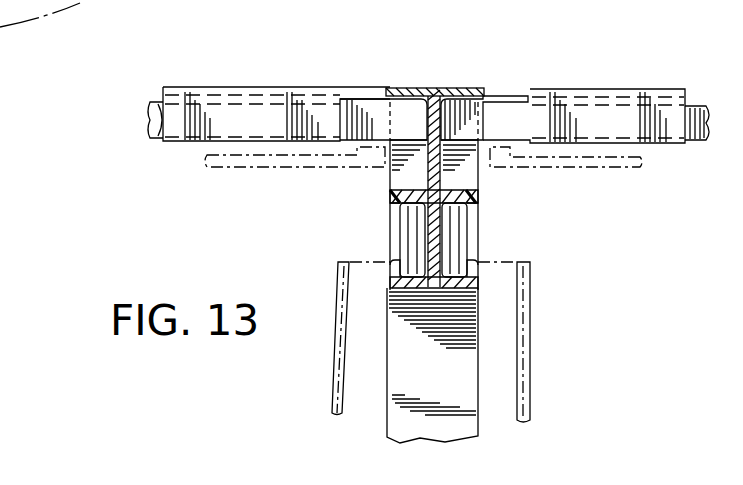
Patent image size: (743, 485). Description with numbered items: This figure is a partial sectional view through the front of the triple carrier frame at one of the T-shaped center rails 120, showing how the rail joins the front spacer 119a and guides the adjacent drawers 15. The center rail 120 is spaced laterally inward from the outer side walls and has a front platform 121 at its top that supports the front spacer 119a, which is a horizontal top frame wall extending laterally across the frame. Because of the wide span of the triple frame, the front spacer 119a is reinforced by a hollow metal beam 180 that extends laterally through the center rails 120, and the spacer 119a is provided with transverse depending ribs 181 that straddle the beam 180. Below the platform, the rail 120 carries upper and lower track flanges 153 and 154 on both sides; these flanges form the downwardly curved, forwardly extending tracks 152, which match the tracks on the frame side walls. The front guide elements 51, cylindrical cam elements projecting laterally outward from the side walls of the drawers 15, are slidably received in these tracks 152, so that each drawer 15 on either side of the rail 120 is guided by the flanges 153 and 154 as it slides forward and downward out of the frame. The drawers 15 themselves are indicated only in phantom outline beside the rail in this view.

The drawer 15 is at (332, 338).
The front guide element 51 is at (400, 243).
The front spacer 119a is at (580, 88).
The T-shaped center rail 120 is at (436, 87).
The front platform 121 is at (498, 95).
The track 152 is at (400, 207).
The upper track flange 153 is at (400, 194).
The lower track flange 154 is at (400, 278).
The hollow metal beam 180 is at (148, 128).
The transverse depending rib 181 is at (185, 130).